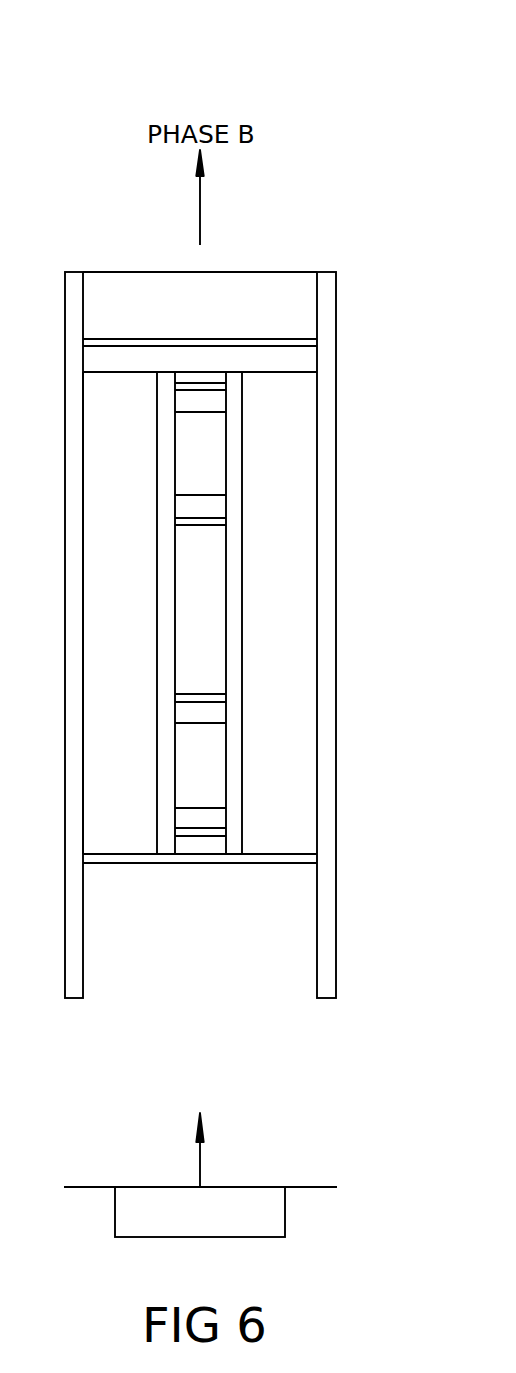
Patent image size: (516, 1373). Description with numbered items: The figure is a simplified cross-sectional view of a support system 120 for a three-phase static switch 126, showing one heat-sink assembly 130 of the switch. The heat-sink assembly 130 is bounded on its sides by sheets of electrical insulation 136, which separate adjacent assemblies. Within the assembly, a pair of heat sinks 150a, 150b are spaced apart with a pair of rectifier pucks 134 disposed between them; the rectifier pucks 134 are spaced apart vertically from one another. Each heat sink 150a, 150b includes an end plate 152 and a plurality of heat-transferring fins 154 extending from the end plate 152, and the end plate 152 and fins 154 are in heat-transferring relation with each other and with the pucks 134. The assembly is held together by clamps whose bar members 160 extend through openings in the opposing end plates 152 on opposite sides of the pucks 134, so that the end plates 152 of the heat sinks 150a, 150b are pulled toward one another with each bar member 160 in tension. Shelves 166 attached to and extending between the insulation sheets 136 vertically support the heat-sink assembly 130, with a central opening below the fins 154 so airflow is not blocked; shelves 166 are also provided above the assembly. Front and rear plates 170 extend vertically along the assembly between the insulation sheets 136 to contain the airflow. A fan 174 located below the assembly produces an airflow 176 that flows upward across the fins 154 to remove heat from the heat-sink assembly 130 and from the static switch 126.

The support system 120 is at (248, 80).
The three-phase static switch 126 is at (352, 175).
The heat-sink assembly 130 is at (255, 202).
The rectifier puck 134 is at (222, 467).
The sheet of electrical insulation 136 is at (296, 284).
The heat sink 150a is at (148, 620).
The heat sink 150b is at (308, 620).
The end plate 152 is at (167, 843).
The heat-transferring fins 154 is at (122, 843).
The bar member 160 is at (202, 386).
The shelf 166 is at (157, 342).
The front and rear plates 170 is at (73, 964).
The fan 174 is at (144, 1224).
The airflow 176 is at (200, 231).